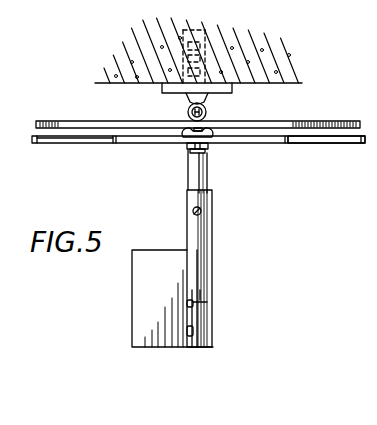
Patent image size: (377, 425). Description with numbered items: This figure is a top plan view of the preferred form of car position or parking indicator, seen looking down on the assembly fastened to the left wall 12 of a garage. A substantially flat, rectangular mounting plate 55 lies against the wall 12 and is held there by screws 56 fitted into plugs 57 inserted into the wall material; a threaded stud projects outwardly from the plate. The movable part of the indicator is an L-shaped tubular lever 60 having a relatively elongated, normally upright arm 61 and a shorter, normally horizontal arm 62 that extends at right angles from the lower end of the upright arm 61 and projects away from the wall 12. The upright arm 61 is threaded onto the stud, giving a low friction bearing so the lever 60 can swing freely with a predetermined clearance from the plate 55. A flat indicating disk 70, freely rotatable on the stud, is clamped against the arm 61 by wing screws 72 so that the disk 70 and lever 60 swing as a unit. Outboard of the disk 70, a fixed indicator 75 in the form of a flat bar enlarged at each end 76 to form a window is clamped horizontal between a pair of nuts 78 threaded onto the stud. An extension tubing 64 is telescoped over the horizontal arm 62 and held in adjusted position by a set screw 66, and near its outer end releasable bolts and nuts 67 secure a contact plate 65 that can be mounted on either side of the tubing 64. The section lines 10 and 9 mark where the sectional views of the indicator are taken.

The left wall 12 is at (270, 71).
The plugs 57 is at (207, 33).
The mounting plate 55 is at (231, 91).
The screws 56 is at (187, 96).
The upright arm 61 is at (206, 111).
The L-shaped lever 60 is at (187, 112).
The indicating disk 70 is at (276, 120).
The fixed indicator 75 is at (276, 144).
The enlarged end 76 is at (331, 144).
The wing screws 72 is at (185, 133).
The nuts 78 is at (208, 147).
The horizontal arm 62 is at (203, 172).
The section line 10— 10 is at (197, 193).
The set screw 66 is at (193, 212).
The extension tubing 64 is at (210, 242).
The contact plate 65 is at (138, 299).
The bolts and nuts 67 is at (212, 307).
The section line 9— 9 is at (198, 412).